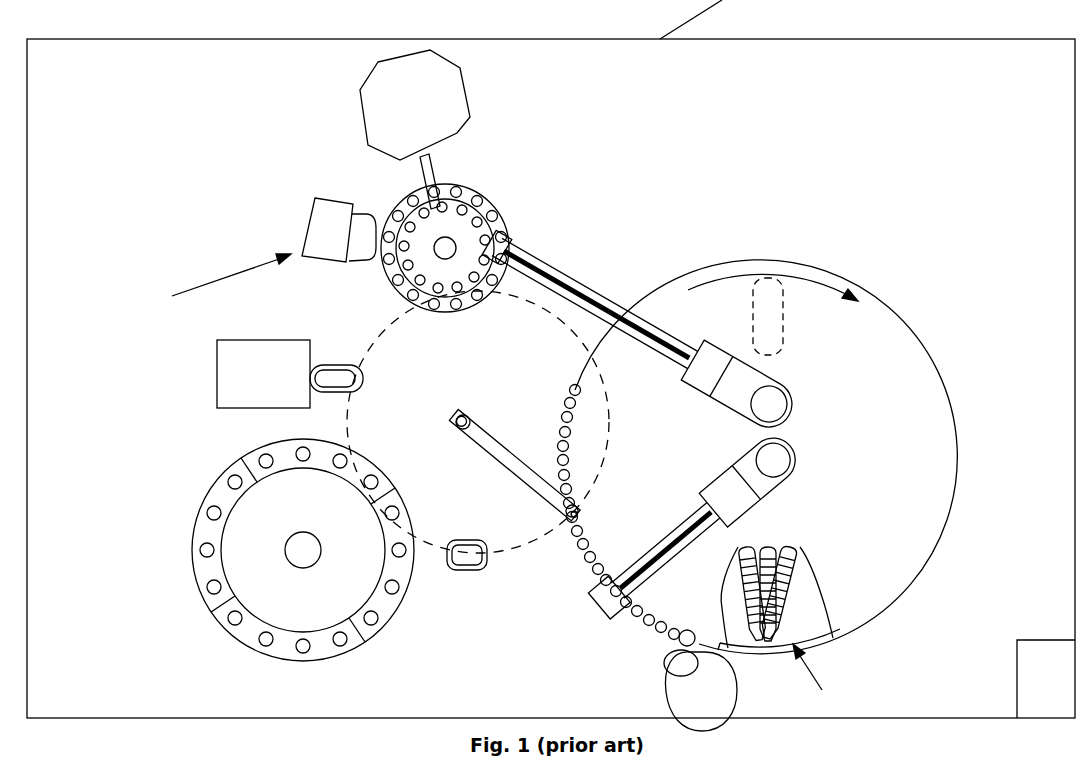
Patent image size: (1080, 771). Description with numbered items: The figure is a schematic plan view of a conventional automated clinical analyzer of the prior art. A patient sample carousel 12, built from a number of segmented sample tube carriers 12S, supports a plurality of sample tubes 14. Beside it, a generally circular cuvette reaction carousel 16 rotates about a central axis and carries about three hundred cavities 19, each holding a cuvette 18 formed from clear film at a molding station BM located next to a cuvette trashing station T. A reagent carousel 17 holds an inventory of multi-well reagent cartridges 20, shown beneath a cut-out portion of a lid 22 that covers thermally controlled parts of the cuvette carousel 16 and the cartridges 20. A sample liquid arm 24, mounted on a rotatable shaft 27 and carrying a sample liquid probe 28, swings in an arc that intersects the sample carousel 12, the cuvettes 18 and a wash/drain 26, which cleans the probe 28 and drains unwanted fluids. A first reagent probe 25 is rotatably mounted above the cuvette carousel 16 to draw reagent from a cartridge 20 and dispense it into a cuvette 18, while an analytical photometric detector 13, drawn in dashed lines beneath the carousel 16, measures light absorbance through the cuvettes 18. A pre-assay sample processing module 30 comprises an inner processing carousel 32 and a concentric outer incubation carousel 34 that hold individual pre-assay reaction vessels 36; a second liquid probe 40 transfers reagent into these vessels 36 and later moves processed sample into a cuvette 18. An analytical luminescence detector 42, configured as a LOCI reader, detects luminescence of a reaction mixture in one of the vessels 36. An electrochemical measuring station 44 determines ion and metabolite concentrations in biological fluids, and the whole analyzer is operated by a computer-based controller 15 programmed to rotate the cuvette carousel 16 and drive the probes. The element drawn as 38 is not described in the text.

The analytical luminescence detector 42 is at (403, 53).
The sensor block 38 is at (327, 196).
The pre-assay sample processing module 30 is at (214, 282).
The inner processing carousel 32 is at (430, 200).
The outer incubation carousel 34 is at (485, 195).
The pre-assay reaction vessels 36 is at (412, 290).
The second liquid probe 40 is at (580, 285).
The first reagent probe 25 is at (657, 545).
The cuvette reaction carousel 16 is at (922, 517).
The analytical photometric detector 13 is at (790, 265).
The lid 22 is at (869, 442).
The computer-based controller 15 is at (1060, 691).
The cuvettes 18 is at (576, 386).
The sample liquid arm 24 is at (528, 483).
The rotatable shaft 27 is at (460, 412).
The sample liquid probe 28 is at (560, 522).
The wash/drain 26 is at (474, 570).
The electrochemical measuring station 44 is at (215, 362).
The patient sample carousel 12 is at (293, 559).
The segmented sample tube carriers 12S is at (205, 488).
The sample tubes 14 is at (372, 619).
The reagent cartridges 20 is at (768, 548).
The reagent carousel 17 is at (818, 677).
The cavities 19 is at (695, 642).
The cuvette trashing station T is at (701, 698).
The molding station BM is at (668, 645).